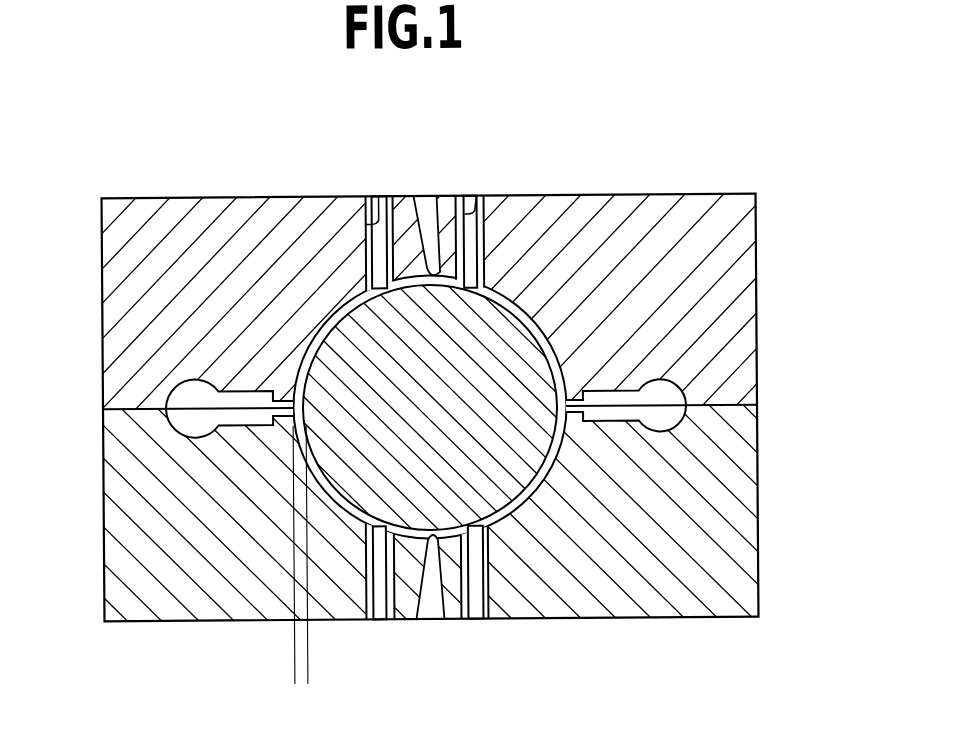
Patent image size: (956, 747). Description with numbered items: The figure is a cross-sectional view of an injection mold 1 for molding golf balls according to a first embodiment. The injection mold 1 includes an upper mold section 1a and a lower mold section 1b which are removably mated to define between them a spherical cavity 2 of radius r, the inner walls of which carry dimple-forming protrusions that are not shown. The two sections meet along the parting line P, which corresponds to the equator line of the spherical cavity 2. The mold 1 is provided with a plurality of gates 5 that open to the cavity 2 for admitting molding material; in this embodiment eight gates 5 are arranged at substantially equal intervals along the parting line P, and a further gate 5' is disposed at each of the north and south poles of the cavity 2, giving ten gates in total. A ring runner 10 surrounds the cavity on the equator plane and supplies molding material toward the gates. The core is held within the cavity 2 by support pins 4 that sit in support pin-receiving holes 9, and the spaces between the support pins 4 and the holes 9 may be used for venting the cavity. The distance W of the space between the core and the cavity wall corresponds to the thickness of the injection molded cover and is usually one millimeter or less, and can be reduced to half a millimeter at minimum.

The injection mold 1 is at (718, 189).
The upper mold section 1a is at (743, 326).
The lower mold section 1b is at (745, 517).
The spherical cavity 2 is at (521, 307).
The support pin 4 is at (384, 196).
The gate 5 is at (437, 377).
The gate 5' is at (428, 408).
The support pin-receiving hole 9 is at (380, 196).
The ring runner 10 is at (664, 396).
The parting line P is at (125, 407).
The distance of the space between core and cavity wall W is at (263, 658).